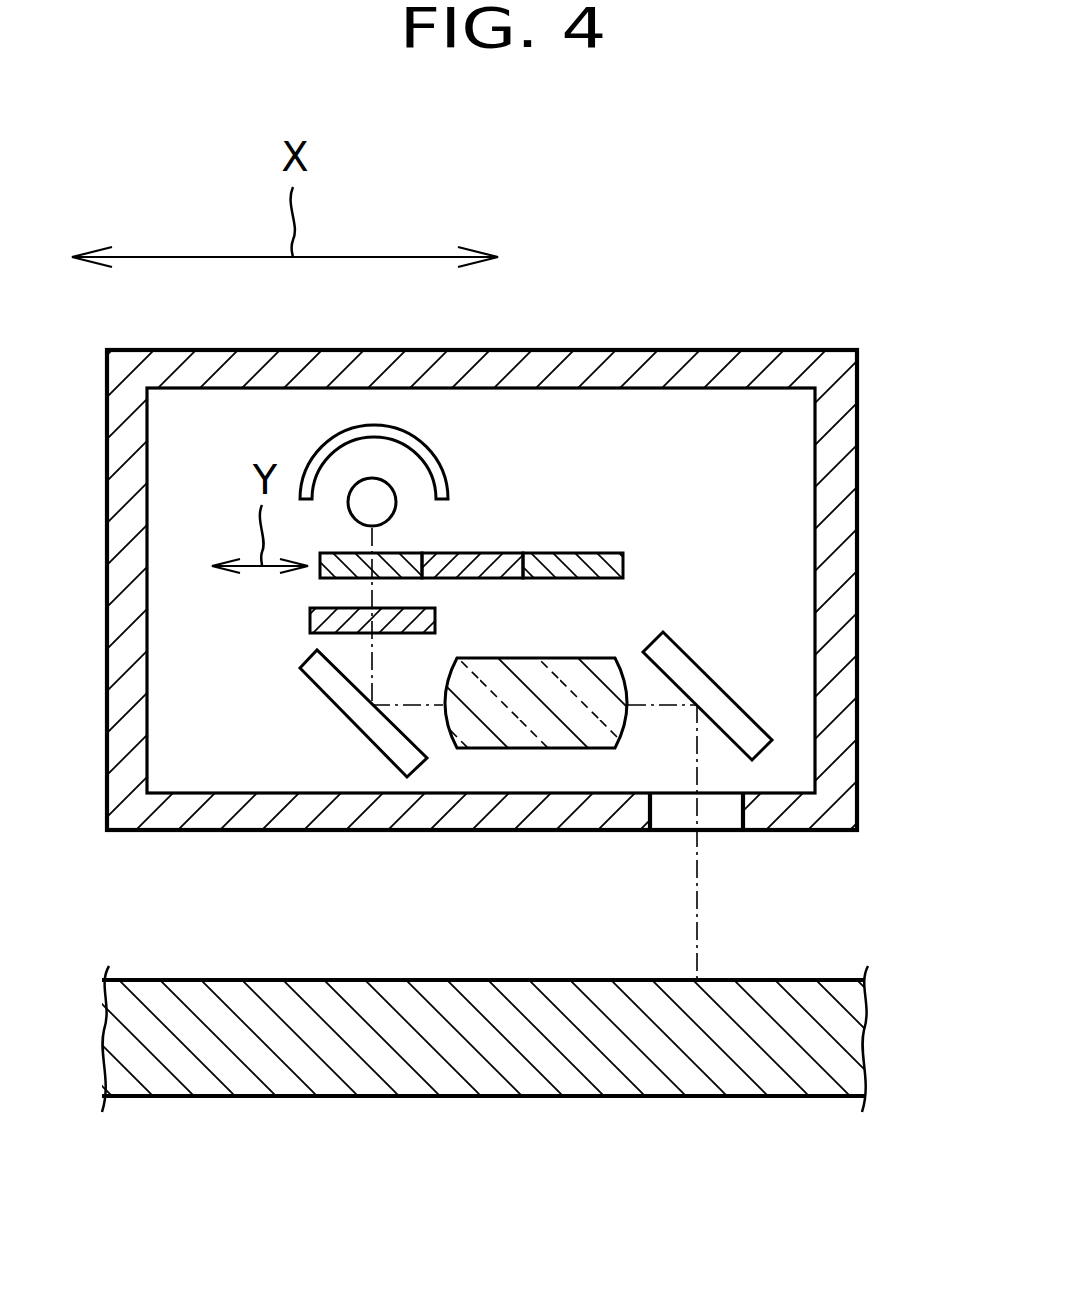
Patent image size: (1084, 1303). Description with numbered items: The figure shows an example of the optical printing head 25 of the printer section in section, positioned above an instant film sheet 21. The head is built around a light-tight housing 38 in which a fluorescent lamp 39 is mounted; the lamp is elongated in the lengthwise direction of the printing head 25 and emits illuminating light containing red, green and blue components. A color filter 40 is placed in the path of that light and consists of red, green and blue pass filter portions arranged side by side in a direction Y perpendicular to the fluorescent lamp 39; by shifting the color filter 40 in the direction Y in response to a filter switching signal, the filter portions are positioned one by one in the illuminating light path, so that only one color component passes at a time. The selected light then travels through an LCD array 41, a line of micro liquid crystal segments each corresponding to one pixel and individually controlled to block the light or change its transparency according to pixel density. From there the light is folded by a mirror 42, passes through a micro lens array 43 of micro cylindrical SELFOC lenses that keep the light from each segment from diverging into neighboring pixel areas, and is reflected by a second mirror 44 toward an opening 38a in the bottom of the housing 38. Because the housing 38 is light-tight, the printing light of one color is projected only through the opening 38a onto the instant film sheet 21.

The instant film sheet 21 is at (508, 1072).
The optical printing head 25 is at (778, 322).
The light-tight housing 38 is at (582, 366).
The opening 38a is at (727, 812).
The fluorescent lamp 39 is at (386, 497).
The color filter 40 is at (655, 556).
The LCD array 41 is at (310, 612).
The mirror 42 is at (335, 711).
The micro lens array 43 is at (543, 728).
The mirror 44 is at (745, 708).